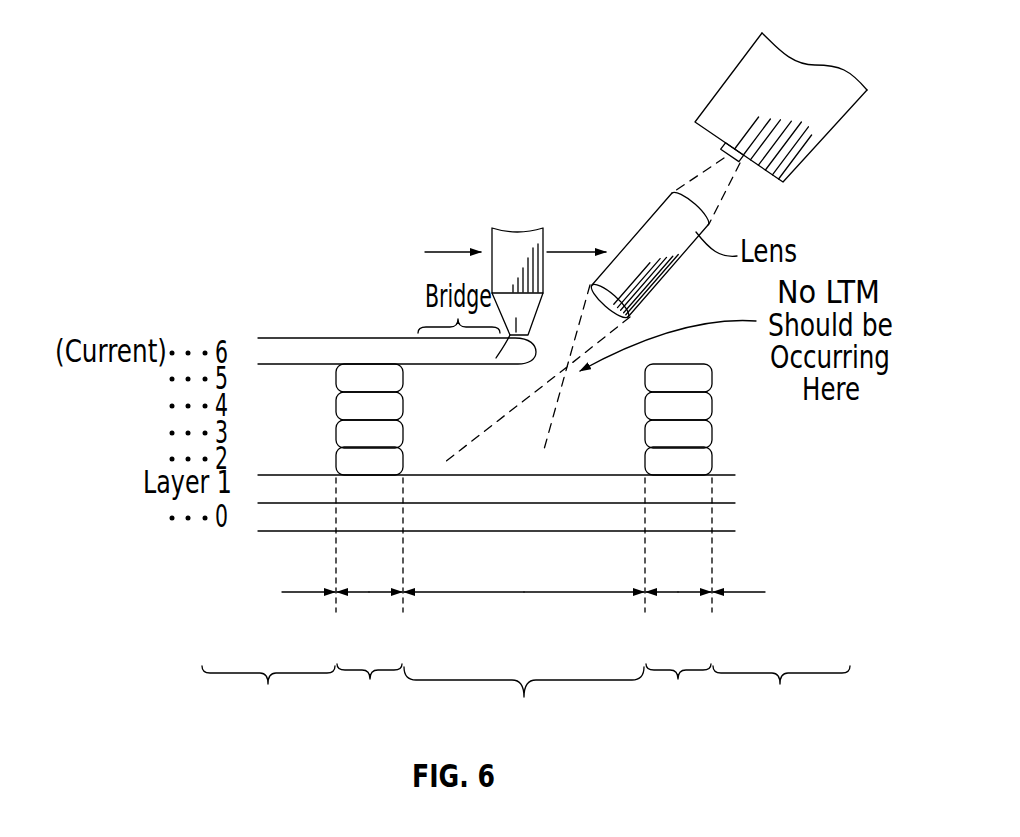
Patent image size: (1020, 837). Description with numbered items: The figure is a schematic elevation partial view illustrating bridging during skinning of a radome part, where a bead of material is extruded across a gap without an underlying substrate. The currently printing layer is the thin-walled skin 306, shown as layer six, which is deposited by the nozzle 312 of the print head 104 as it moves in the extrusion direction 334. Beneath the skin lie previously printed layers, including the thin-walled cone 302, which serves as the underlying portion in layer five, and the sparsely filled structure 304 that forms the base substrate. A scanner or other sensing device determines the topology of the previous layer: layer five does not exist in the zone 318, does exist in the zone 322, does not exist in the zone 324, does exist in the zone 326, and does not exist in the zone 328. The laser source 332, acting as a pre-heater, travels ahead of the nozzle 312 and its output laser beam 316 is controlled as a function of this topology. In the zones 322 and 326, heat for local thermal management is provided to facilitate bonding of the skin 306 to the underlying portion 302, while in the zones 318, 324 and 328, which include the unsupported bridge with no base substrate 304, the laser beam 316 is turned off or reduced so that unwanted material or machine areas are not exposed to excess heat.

The print head 104 is at (520, 246).
The thin-walled cone 302 is at (355, 431).
The sparsely filled structure 304 is at (690, 494).
The thin-walled skin 306 is at (290, 338).
The nozzle 312 is at (510, 337).
The laser beam 316 is at (578, 349).
The zone 318 is at (257, 649).
The zone 322 is at (369, 638).
The zone 324 is at (525, 641).
The zone 326 is at (678, 637).
The zone 328 is at (791, 648).
The laser source 332 is at (753, 72).
The extrusion direction 334 is at (454, 252).